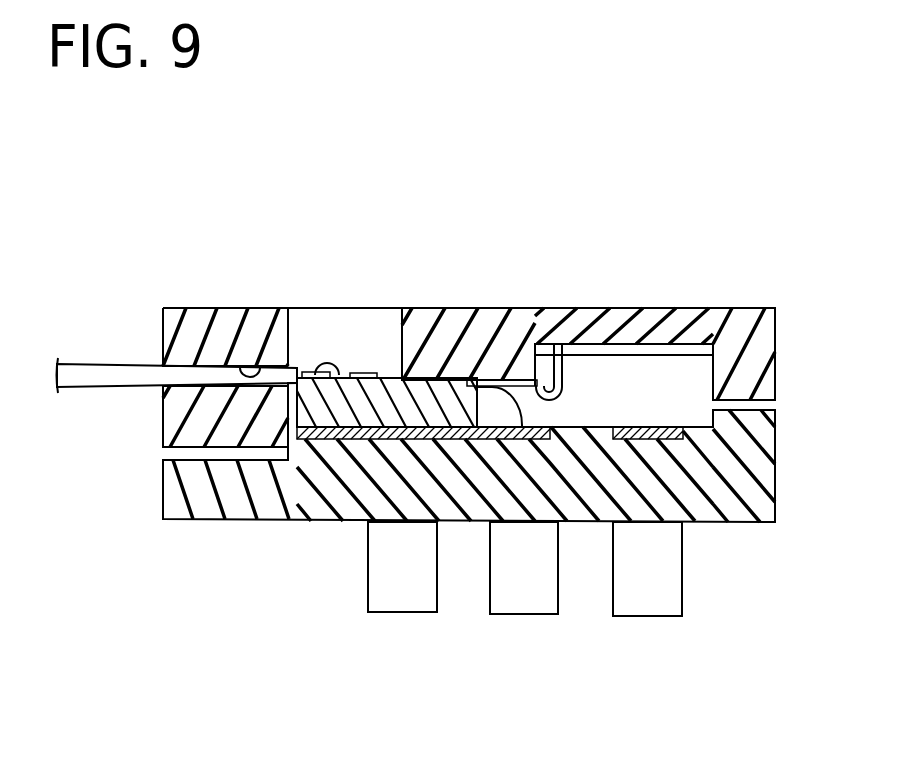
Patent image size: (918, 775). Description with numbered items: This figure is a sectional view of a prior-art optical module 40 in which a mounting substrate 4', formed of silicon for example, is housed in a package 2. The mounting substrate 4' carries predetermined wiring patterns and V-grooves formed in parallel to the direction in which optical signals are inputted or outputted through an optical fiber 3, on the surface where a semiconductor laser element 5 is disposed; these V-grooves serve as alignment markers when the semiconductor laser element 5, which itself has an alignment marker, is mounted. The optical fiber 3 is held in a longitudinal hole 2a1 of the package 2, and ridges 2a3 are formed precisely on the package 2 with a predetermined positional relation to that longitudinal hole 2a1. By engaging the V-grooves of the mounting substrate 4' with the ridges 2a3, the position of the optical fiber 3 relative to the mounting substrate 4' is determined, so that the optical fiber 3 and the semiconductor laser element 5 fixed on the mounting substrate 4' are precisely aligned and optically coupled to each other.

The optical module 40 is at (482, 271).
The package 2 is at (679, 309).
The longitudinal hole 2a1 is at (247, 368).
The ridges 2a3 is at (561, 344).
The optical fiber 3 is at (110, 368).
The mounting substrate 4' is at (387, 339).
The semiconductor laser element 5 is at (312, 368).